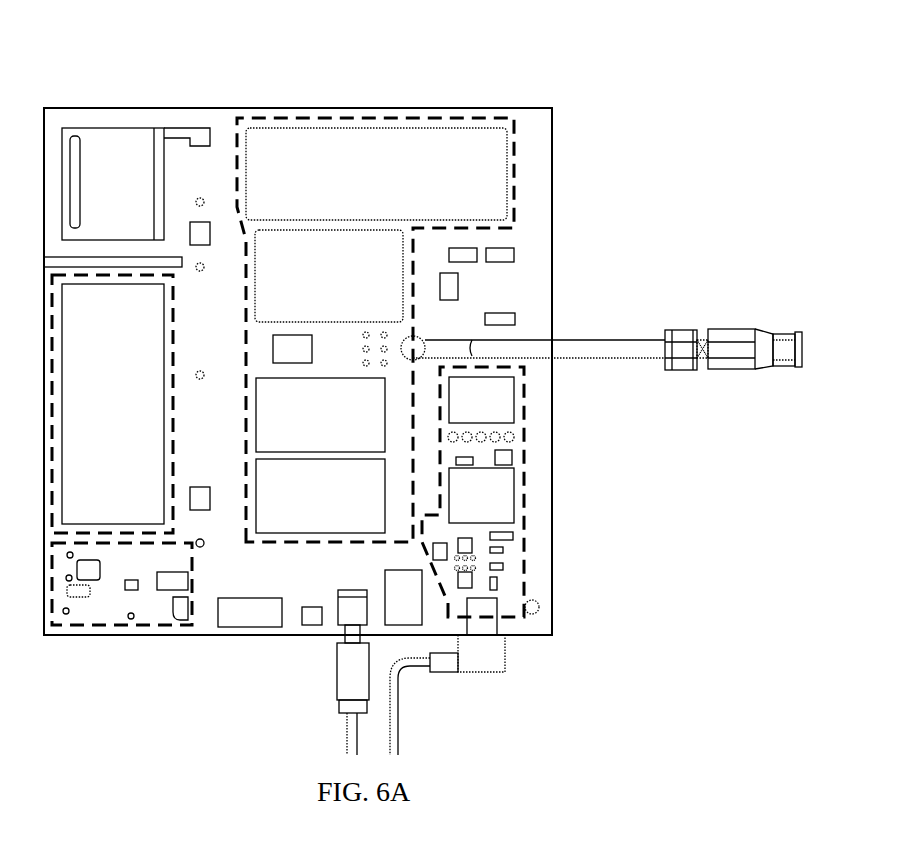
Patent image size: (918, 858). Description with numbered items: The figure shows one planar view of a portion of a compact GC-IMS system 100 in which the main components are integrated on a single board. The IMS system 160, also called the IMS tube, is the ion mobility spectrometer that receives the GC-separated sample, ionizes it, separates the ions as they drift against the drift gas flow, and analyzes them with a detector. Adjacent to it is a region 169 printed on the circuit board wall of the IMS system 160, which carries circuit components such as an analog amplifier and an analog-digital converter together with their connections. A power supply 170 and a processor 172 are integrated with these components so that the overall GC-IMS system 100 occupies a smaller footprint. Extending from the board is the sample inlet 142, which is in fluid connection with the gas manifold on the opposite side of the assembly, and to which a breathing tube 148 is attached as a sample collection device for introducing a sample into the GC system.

The GC-IMS system 100 is at (273, 58).
The IMS system 160 is at (176, 346).
The region 169 is at (196, 572).
The power supply 170 is at (518, 162).
The processor 172 is at (528, 525).
The sample inlet 142 is at (681, 328).
The breathing tube 148 is at (763, 329).